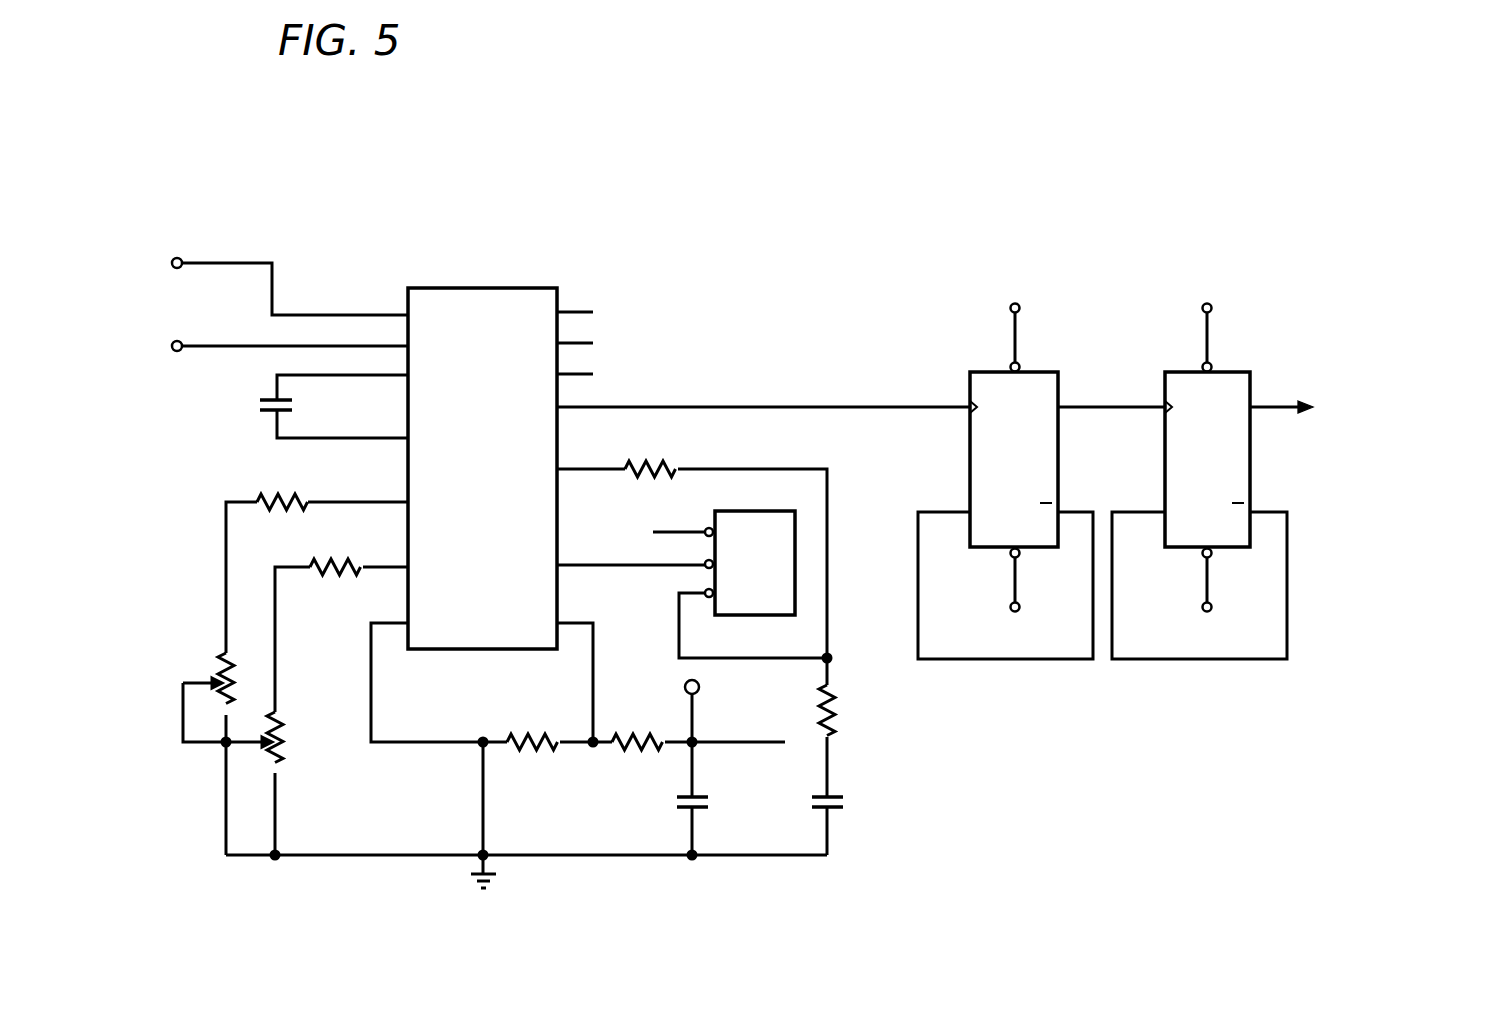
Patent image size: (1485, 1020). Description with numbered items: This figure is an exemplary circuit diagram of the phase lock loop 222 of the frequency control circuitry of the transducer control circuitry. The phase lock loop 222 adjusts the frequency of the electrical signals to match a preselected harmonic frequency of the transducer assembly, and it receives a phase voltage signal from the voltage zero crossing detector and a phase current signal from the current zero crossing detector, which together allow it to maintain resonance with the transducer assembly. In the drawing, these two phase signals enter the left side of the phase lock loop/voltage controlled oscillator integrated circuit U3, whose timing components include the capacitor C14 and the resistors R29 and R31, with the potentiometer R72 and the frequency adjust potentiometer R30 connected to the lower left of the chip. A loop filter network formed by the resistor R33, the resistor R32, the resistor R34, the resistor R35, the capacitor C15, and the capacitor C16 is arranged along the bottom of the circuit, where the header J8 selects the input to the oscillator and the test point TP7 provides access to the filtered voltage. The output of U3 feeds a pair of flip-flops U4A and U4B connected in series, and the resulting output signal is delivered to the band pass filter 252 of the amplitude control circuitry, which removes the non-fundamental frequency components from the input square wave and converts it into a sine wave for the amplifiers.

The phase lock loop 222 is at (710, 145).
The band pass filter 252 is at (1353, 420).
The 4046 phase-locked loop IC U3 is at (673, 469).
The 7474 flip-flop A U4A is at (1041, 467).
The 7474 flip-flop B U4B is at (1199, 467).
The 3 pin header J8 is at (692, 570).
The resistor 68K R29 is at (317, 560).
The frequency adjust potentiometer 20K R30 is at (332, 785).
The resistor 15K R31 is at (341, 622).
The resistor 10K R32 is at (547, 739).
The resistor 100K R33 is at (694, 548).
The resistor 100K R34 is at (700, 739).
The resistor 5.1K R35 is at (855, 727).
The potentiometer 100K R72 is at (209, 743).
The capacitor 220p C14 is at (334, 406).
The capacitor .01u C15 is at (719, 800).
The capacitor .1u C16 is at (854, 819).
The test point 7 TP7 is at (716, 708).